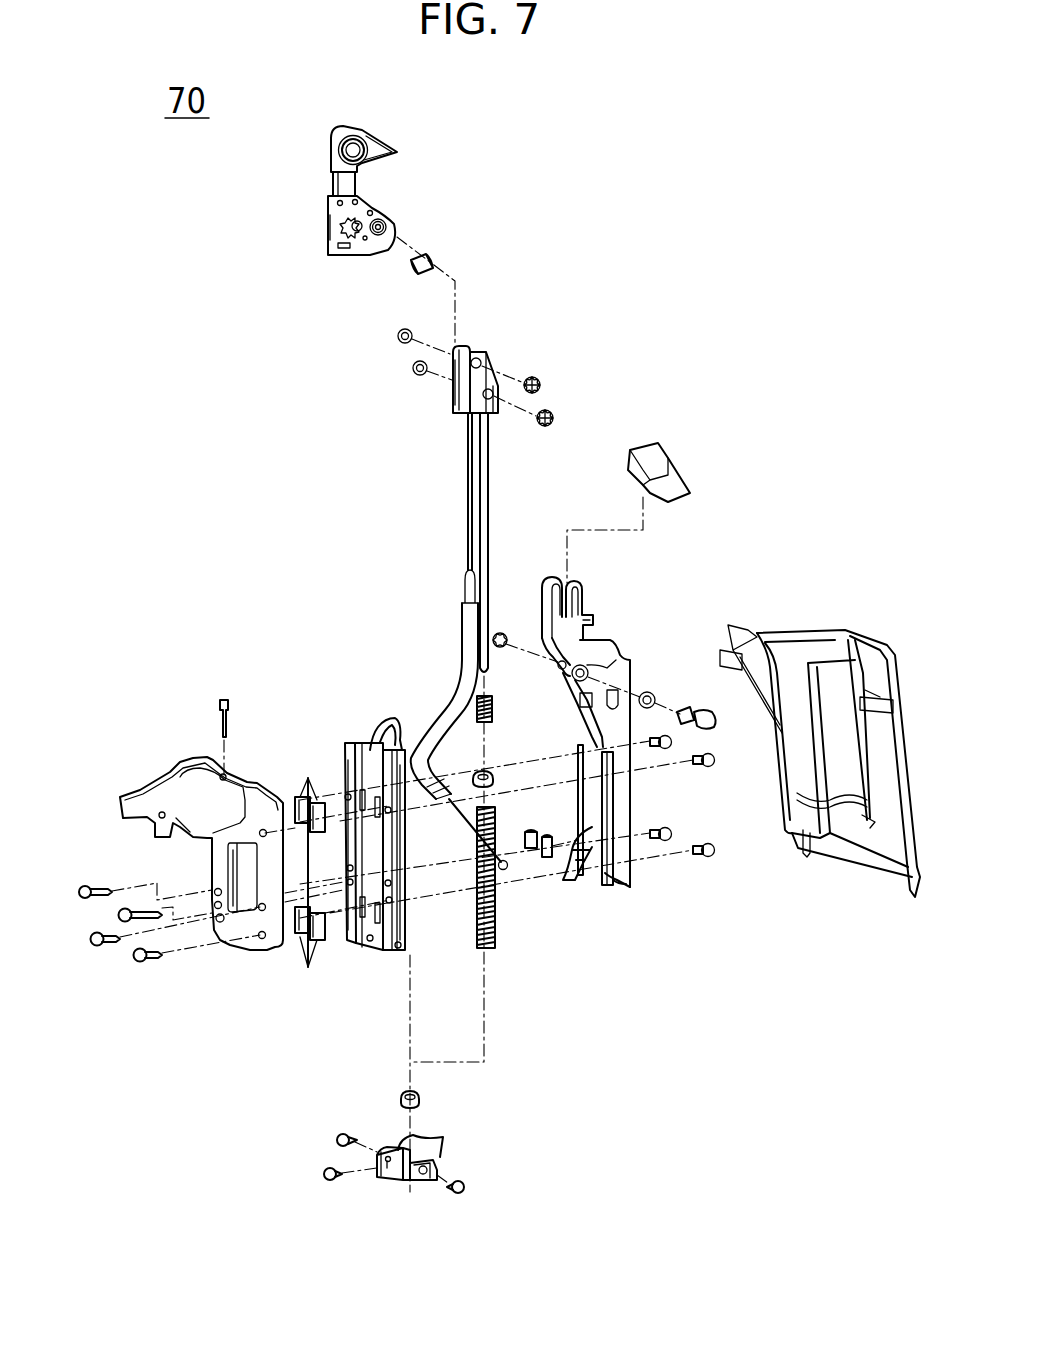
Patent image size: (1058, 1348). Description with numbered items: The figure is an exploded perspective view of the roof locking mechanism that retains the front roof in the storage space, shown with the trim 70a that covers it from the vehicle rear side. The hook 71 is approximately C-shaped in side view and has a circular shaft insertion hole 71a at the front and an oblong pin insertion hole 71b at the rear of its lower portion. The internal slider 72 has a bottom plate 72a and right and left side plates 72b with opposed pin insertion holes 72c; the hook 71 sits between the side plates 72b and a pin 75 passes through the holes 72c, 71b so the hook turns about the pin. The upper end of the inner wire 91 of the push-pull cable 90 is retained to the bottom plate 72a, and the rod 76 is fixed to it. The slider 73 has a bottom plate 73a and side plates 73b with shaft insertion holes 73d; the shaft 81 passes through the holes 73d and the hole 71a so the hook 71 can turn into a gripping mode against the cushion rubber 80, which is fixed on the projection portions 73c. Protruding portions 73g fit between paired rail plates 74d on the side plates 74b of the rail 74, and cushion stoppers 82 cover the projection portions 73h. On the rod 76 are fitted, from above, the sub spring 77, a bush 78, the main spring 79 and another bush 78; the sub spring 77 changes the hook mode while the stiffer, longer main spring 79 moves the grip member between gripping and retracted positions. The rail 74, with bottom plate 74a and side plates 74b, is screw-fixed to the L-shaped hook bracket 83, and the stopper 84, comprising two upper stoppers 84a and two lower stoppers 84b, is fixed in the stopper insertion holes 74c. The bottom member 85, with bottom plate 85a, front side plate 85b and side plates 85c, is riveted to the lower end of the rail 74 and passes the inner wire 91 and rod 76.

The trim 70a is at (883, 637).
The hook 71 is at (350, 127).
The shaft insertion hole 71a is at (331, 228).
The pin insertion hole 71b is at (380, 222).
The internal slider 72 is at (472, 346).
The bottom plate 72a is at (460, 414).
The side plates 72b is at (452, 396).
The pin insertion hole 72c is at (450, 350).
The slider 73 is at (642, 801).
The bottom plate 73a is at (620, 653).
The side plates 73b is at (575, 696).
The projection portion 73c is at (586, 616).
The shaft insertion hole 73d is at (550, 660).
The protruding portion 73g is at (628, 876).
The projection portion 73h is at (570, 866).
The rail 74 is at (345, 729).
The bottom plate 74a is at (380, 953).
The side plates 74b is at (410, 930).
The stopper insertion holes 74c is at (364, 897).
The rail plates 74d is at (395, 724).
The pin 75 is at (428, 262).
The rod 76 is at (491, 548).
The sub spring 77 is at (493, 712).
The bush 78 is at (487, 772).
The main spring 79 is at (496, 943).
The cushion rubber 80 is at (658, 447).
The shaft 81 is at (714, 728).
The cushion stopper 82 is at (547, 832).
The hook bracket 83 is at (152, 787).
The stopper 84 is at (302, 867).
The upper stoppers 84a is at (310, 790).
The lower stoppers 84b is at (310, 952).
The bottom member 85 is at (385, 1186).
The bottom plate 85a is at (413, 1183).
The front side plate 85b is at (375, 1158).
The side plates 85c is at (445, 1135).
The push-pull cable 90 is at (450, 665).
The inner wire 91 is at (467, 516).